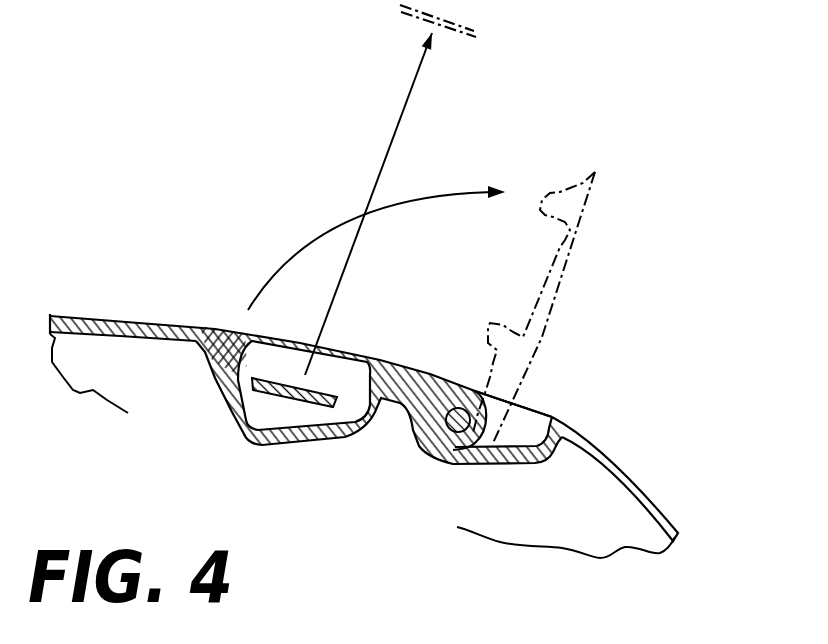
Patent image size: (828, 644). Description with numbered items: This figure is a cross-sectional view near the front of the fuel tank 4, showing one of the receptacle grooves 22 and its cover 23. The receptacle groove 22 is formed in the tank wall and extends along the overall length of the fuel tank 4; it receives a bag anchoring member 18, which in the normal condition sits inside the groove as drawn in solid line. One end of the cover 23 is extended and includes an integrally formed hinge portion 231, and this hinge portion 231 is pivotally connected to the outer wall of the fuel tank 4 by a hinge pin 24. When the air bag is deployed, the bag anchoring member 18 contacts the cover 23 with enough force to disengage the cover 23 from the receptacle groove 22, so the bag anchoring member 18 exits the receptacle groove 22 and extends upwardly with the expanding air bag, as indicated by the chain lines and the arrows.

The fuel tank 4 is at (640, 477).
The bag anchoring member 18 is at (270, 388).
The receptacle groove 22 is at (314, 428).
The cover 23 is at (217, 327).
The hinge portion 231 is at (477, 443).
The hinge pin 24 is at (472, 443).